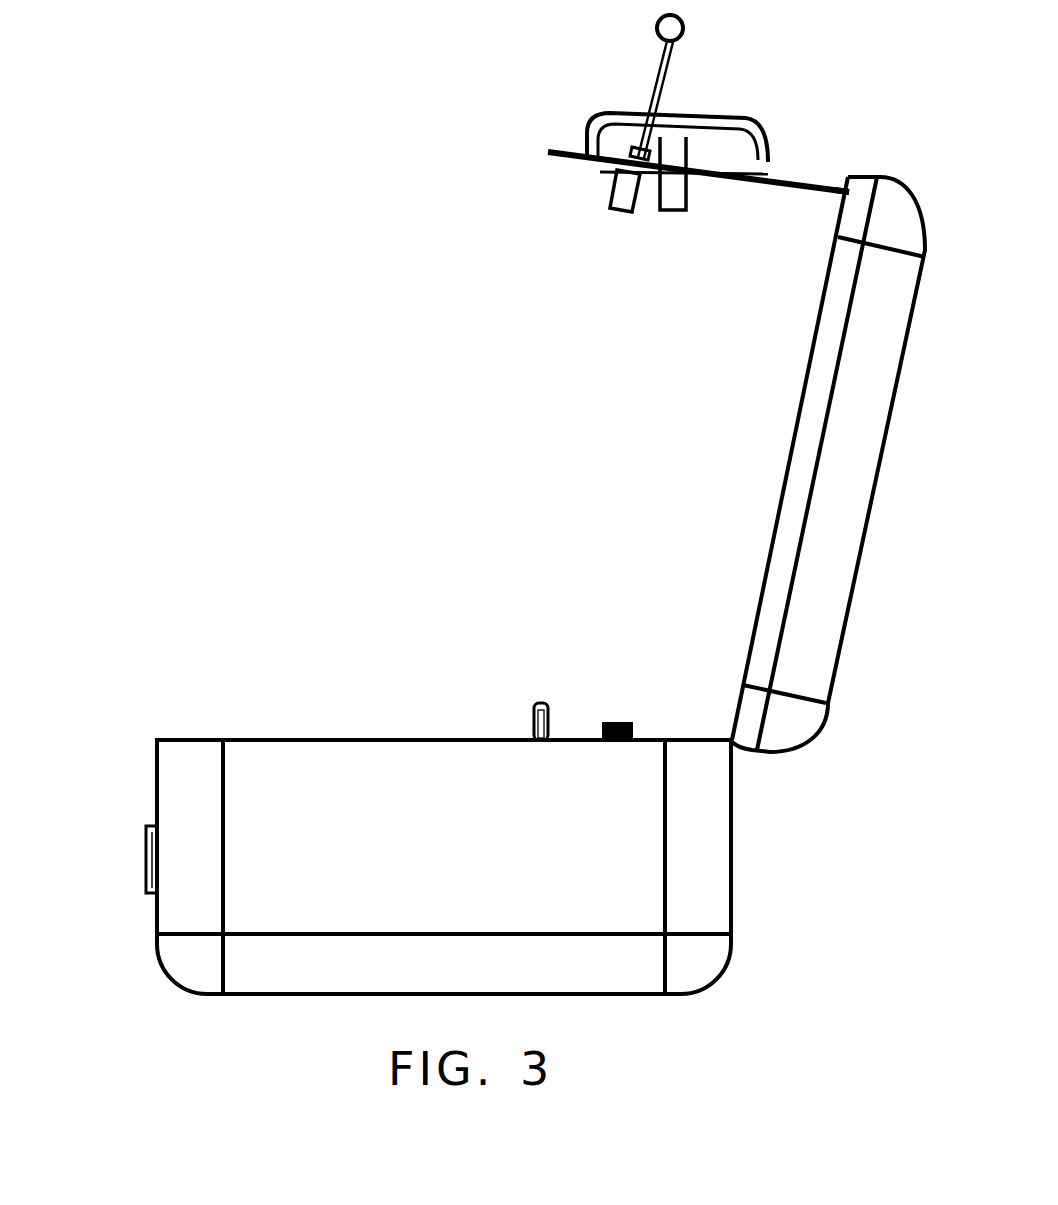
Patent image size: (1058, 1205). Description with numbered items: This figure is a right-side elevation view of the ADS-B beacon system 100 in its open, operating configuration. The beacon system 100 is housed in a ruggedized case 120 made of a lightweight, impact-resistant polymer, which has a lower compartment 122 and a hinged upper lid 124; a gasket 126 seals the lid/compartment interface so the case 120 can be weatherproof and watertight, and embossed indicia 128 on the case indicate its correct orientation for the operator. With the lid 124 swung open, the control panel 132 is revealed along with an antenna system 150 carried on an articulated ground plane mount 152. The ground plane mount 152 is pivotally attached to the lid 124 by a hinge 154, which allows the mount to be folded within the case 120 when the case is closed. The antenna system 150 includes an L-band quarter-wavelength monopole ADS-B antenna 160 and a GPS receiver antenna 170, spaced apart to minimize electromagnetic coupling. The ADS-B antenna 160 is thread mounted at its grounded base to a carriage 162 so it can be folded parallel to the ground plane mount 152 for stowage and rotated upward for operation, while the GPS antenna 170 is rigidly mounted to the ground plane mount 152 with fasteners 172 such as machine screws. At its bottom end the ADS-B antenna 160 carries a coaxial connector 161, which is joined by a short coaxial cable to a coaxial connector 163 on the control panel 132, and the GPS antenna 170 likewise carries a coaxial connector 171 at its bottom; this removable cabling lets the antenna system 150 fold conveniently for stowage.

The ADS-B beacon system 100 is at (333, 222).
The ruggedized case 120 is at (735, 850).
The lower compartment 122 is at (733, 918).
The hinged upper lid 124 is at (864, 540).
The gasket 126 is at (760, 597).
The embossed indicia 128 is at (147, 875).
The control panel 132 is at (476, 738).
The antenna system 150 is at (673, 145).
The articulated ground plane mount 152 is at (546, 703).
The hinge 154 is at (847, 194).
The ADS-B antenna 160 is at (656, 62).
The coaxial connector 161 is at (622, 213).
The carriage 162 is at (597, 158).
The coaxial connector 163 is at (620, 722).
The GPS receiver antenna 170 is at (760, 132).
The coaxial connector 171 is at (674, 213).
The fasteners 172 is at (744, 135).